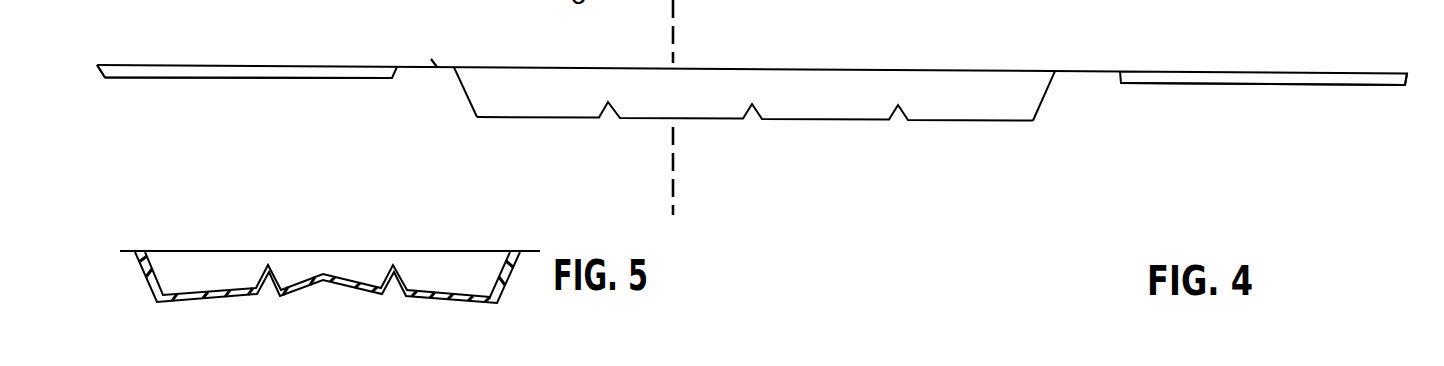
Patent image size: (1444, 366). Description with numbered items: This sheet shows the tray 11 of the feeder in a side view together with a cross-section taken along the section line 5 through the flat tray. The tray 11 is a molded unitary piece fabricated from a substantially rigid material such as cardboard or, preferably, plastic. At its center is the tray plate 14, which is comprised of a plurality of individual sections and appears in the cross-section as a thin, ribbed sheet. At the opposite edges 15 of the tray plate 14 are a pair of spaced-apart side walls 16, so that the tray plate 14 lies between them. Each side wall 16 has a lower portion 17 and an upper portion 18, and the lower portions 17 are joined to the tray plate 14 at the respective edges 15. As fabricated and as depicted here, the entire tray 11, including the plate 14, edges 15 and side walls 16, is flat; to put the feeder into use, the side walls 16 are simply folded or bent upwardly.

In FIG. 4, the section line 5- 5 is at (660, 199).
In FIG. 4, the tray 11 is at (753, 118).
In FIG. 4, the tray plate 14 is at (813, 78).
In FIG. 5, the tray plate 14 is at (313, 290).
In FIG. 4, the edges 15 is at (427, 68).
In FIG. 4, the side walls 16 is at (270, 84).
In FIG. 4, the lower portion 17 is at (357, 80).
In FIG. 4, the upper portion 18 is at (170, 78).